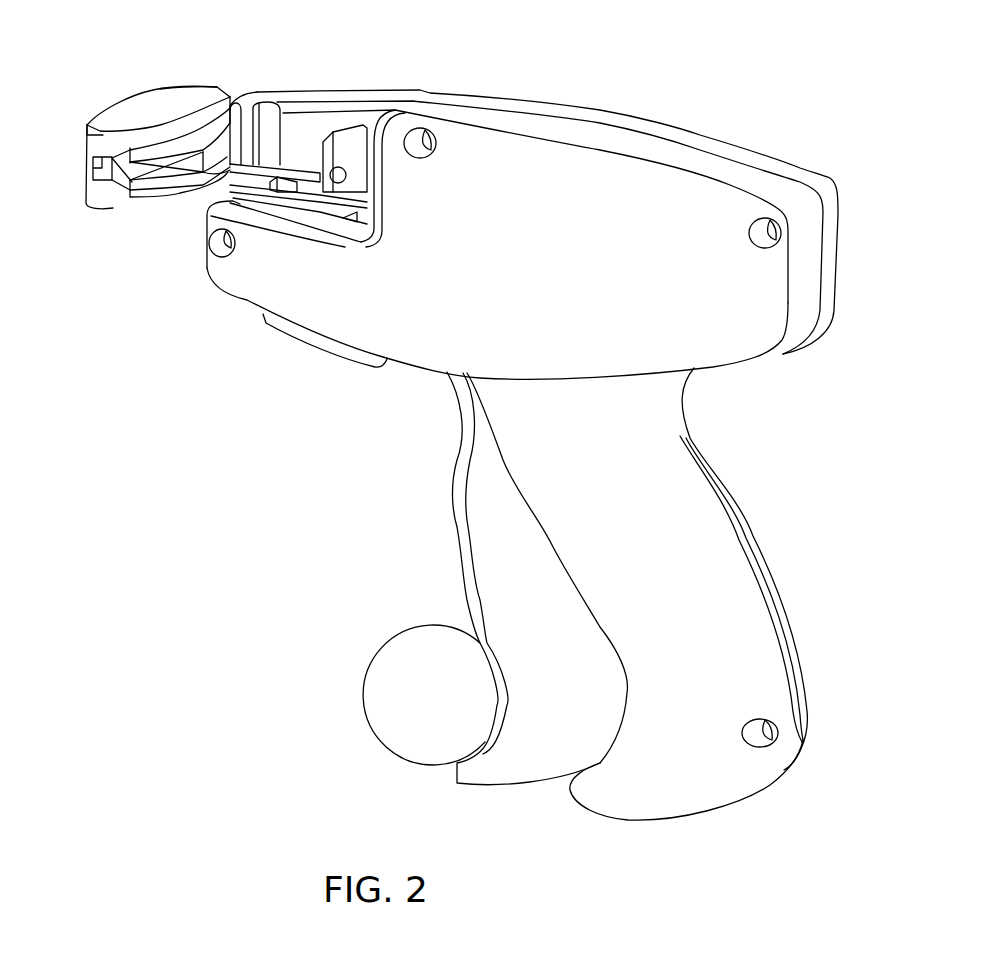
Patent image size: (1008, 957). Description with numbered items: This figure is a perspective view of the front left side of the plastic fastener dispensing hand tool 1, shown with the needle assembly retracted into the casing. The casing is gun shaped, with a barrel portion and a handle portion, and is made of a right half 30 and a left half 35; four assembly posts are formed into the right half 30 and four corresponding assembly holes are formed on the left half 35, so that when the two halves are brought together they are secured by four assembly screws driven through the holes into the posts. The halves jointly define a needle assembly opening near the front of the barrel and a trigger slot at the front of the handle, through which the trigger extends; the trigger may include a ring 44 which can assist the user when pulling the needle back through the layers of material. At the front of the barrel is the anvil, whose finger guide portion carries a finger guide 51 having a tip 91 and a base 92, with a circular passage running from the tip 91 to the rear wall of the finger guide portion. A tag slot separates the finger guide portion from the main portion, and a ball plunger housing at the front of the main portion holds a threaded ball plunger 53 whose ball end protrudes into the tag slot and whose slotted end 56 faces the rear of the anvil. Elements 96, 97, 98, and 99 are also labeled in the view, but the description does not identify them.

The plastic fastener dispensing hand tool 1 is at (692, 92).
The right half 30 is at (828, 256).
The left half 35 is at (802, 325).
The ring 44 is at (370, 684).
The finger guide 51 is at (114, 113).
The threaded ball plunger 53 is at (224, 102).
The slotted end 56 is at (192, 94).
The tip 91 is at (175, 199).
The base 92 is at (193, 197).
The middle guide plate 96 is at (180, 142).
The bracket 97 is at (96, 168).
The lower guide edge 98 is at (216, 184).
The lower plate 99 is at (138, 200).